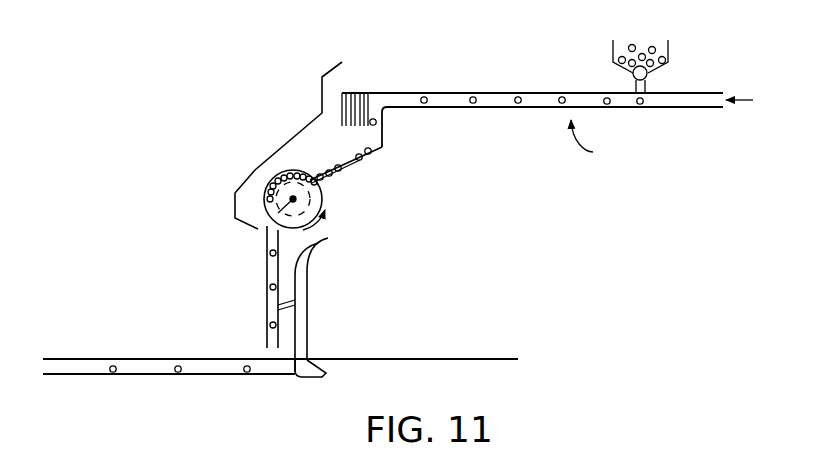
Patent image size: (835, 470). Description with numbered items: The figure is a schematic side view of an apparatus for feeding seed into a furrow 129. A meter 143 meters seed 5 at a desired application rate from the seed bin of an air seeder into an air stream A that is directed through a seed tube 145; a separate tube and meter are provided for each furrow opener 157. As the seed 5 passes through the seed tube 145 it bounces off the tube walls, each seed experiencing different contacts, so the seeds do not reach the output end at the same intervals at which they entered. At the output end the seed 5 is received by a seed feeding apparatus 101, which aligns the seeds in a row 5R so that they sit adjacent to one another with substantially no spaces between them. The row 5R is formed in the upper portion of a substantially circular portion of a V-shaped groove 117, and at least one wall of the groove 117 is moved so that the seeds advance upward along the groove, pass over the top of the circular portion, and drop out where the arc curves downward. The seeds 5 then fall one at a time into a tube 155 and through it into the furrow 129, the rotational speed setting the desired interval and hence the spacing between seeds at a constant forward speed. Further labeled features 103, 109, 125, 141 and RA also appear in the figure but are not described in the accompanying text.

The seed 5 is at (633, 45).
The row 5R is at (263, 172).
The seed feeding apparatus 101 is at (258, 173).
The inlet guide 103 is at (322, 170).
The rotation axis RA is at (243, 212).
The rotation direction of rotor 109 is at (338, 226).
The V-shaped groove 117 is at (326, 196).
The feed guide 125 is at (356, 166).
The furrow 129 is at (88, 363).
The conveying direction 141 is at (601, 144).
The meter 143 is at (649, 80).
The seed tube 145 is at (505, 93).
The tube 155 is at (265, 272).
The furrow opener 157 is at (328, 358).
The air stream A is at (750, 103).